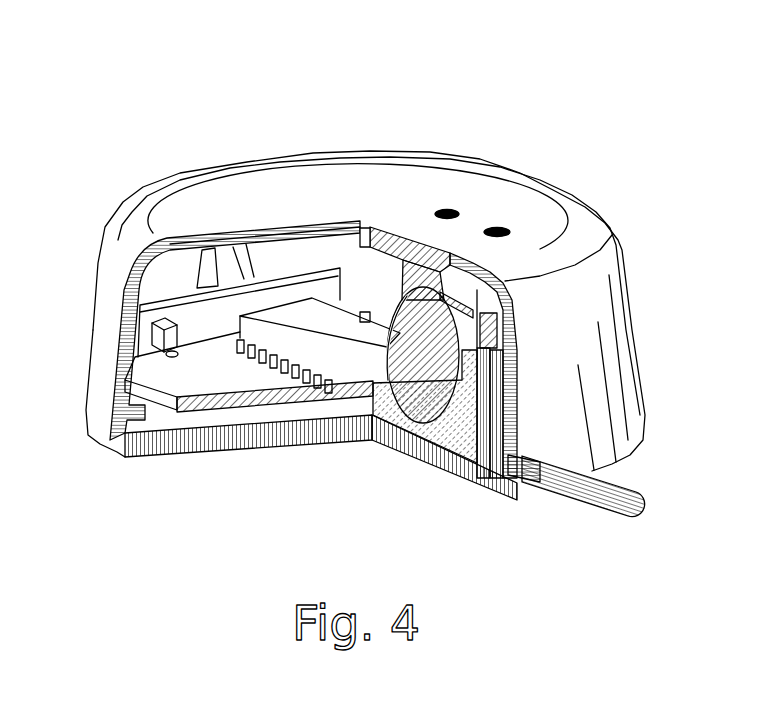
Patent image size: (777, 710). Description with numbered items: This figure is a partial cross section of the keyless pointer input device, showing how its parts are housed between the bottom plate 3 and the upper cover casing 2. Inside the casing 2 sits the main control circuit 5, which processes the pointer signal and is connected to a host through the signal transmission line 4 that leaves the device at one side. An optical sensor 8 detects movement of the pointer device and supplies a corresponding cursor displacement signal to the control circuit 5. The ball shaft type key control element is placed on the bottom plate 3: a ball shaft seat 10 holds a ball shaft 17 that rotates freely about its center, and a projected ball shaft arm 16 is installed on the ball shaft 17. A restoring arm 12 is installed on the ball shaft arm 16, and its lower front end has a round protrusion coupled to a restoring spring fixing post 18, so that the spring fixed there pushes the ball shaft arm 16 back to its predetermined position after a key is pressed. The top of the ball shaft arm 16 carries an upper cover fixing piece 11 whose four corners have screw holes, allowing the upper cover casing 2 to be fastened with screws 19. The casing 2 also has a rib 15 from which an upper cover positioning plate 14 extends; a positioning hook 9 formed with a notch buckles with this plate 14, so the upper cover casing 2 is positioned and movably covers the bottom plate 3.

The upper cover casing 2 is at (550, 195).
The bottom plate 3 is at (165, 458).
The signal transmission line 4 is at (568, 488).
The main control circuit 5 is at (225, 385).
The optical sensor 8 is at (297, 317).
The positioning hook 9 is at (163, 347).
The ball shaft seat 10 is at (457, 288).
The upper cover fixing piece 11 is at (405, 253).
The restoring arm 12 is at (465, 335).
The upper cover positioning plate 14 is at (165, 310).
The rib 15 is at (218, 262).
The ball shaft arm 16 is at (418, 292).
The ball shaft 17 is at (416, 458).
The restoring spring fixing post 18 is at (463, 473).
The screws 19 is at (449, 209).